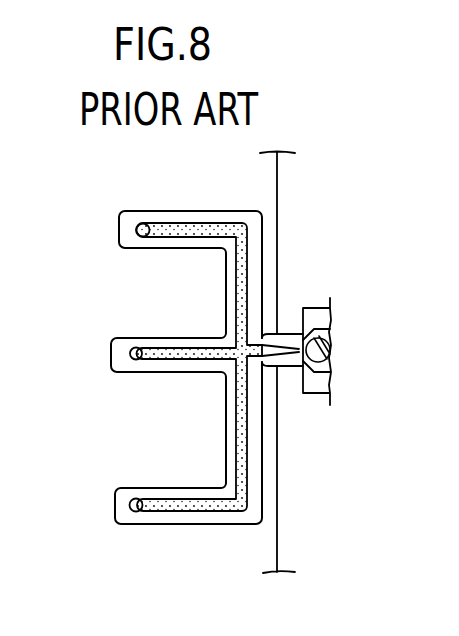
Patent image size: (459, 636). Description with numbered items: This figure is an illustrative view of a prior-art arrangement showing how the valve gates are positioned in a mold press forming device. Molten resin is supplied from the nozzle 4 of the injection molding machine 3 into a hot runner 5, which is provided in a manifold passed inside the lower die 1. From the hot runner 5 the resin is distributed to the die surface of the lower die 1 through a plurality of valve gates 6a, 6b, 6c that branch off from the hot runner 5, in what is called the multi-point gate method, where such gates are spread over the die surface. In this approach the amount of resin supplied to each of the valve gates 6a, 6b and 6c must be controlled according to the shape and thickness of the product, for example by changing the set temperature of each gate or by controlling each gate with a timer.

The lower die 1 is at (257, 540).
The injection molding machine 3 is at (316, 308).
The nozzle 4 is at (287, 359).
The hot runner 5 is at (245, 422).
The valve gate 6a is at (136, 230).
The valve gate 6b is at (130, 352).
The valve gate 6c is at (129, 505).